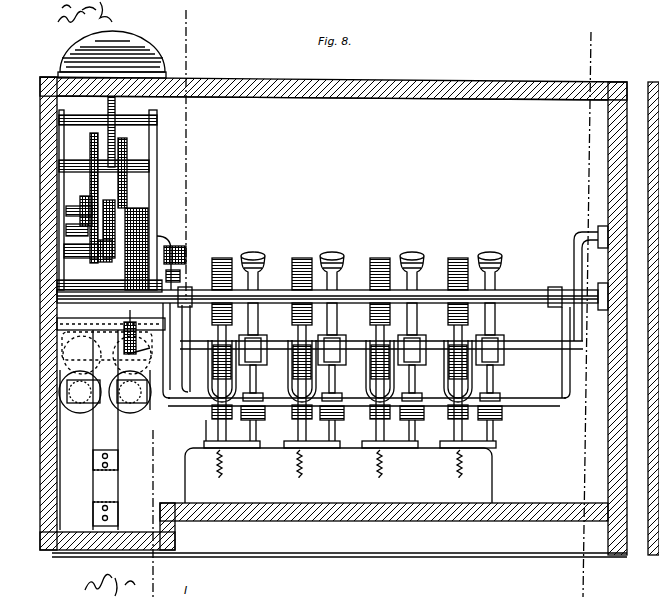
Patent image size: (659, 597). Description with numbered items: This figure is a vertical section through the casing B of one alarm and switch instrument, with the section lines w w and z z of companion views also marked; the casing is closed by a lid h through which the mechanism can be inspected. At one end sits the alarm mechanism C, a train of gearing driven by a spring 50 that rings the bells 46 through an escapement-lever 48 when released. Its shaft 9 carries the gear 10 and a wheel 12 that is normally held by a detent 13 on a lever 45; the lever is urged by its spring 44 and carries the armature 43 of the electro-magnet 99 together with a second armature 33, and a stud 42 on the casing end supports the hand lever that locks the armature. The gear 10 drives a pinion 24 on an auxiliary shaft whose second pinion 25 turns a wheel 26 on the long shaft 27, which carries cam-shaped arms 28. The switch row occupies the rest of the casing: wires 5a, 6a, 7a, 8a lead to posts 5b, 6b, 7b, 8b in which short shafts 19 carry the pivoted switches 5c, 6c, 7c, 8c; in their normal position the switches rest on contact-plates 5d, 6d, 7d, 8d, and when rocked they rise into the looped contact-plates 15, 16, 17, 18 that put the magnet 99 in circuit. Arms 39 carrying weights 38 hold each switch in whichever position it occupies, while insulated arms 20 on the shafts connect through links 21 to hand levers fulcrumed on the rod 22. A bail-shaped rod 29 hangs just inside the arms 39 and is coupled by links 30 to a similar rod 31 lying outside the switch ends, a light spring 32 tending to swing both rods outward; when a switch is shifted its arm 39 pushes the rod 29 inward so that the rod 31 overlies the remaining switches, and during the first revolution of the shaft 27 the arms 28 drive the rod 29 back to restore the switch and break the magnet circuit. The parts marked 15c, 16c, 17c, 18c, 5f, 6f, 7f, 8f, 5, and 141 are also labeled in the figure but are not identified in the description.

The bell 46 is at (142, 42).
The spring 50 is at (133, 214).
The alarm mechanism C is at (152, 186).
The gear 10 is at (68, 214).
The shaft 9 is at (68, 232).
The pinion 24 is at (70, 252).
The detent 13 is at (88, 258).
The wheel 12 is at (104, 256).
The pinion 25 is at (184, 250).
The wheel 26 is at (183, 278).
The weight 38 is at (339, 291).
The shaft 27 is at (292, 293).
The rod 22 is at (548, 303).
The rod 29 is at (580, 246).
The cam-shaped arm 28 is at (188, 372).
The rod 31 is at (166, 360).
The link 30 is at (300, 341).
The arm 39 is at (222, 340).
The contact-plate 15 is at (233, 385).
The contact-plate 16 is at (312, 385).
The contact-plate 17 is at (390, 385).
The contact-plate 18 is at (468, 385).
The valve stem 15c is at (248, 322).
The valve stem 16c is at (327, 322).
The valve stem 17c is at (407, 322).
The valve stem 18c is at (485, 322).
The valve head 5f is at (255, 256).
The valve head 6f is at (334, 256).
The valve head 7f is at (414, 256).
The valve head 8f is at (491, 256).
The link 21 is at (258, 384).
The shaft 19 is at (404, 398).
The arm 20 is at (372, 417).
The post 5b is at (208, 410).
The post 6b is at (290, 410).
The post 7b is at (368, 415).
The post 8b is at (448, 420).
The switch 5c is at (230, 437).
The switch 6c is at (310, 437).
The switch 7c is at (390, 437).
The switch 8c is at (468, 437).
The contact-plate 5d is at (238, 445).
The contact-plate 6d is at (316, 445).
The contact-plate 7d is at (390, 445).
The contact-plate 8d is at (470, 445).
The wire 5a is at (228, 465).
The wire 6a is at (308, 465).
The wire 7a is at (388, 465).
The wire 8a is at (468, 465).
The valve unit 5 is at (206, 433).
The spring 32 is at (338, 462).
The stud 42 is at (74, 322).
The armature 43 is at (107, 346).
The lever 45 is at (107, 356).
The second armature 33 is at (105, 392).
The escapement-lever 48 is at (82, 404).
The spring 44 is at (105, 430).
The electro-magnet 99 is at (150, 342).
The lever 141 is at (142, 352).
The casing B is at (50, 460).
The lid h is at (356, 82).
The section line w w is at (171, 298).
The section line z z is at (587, 307).